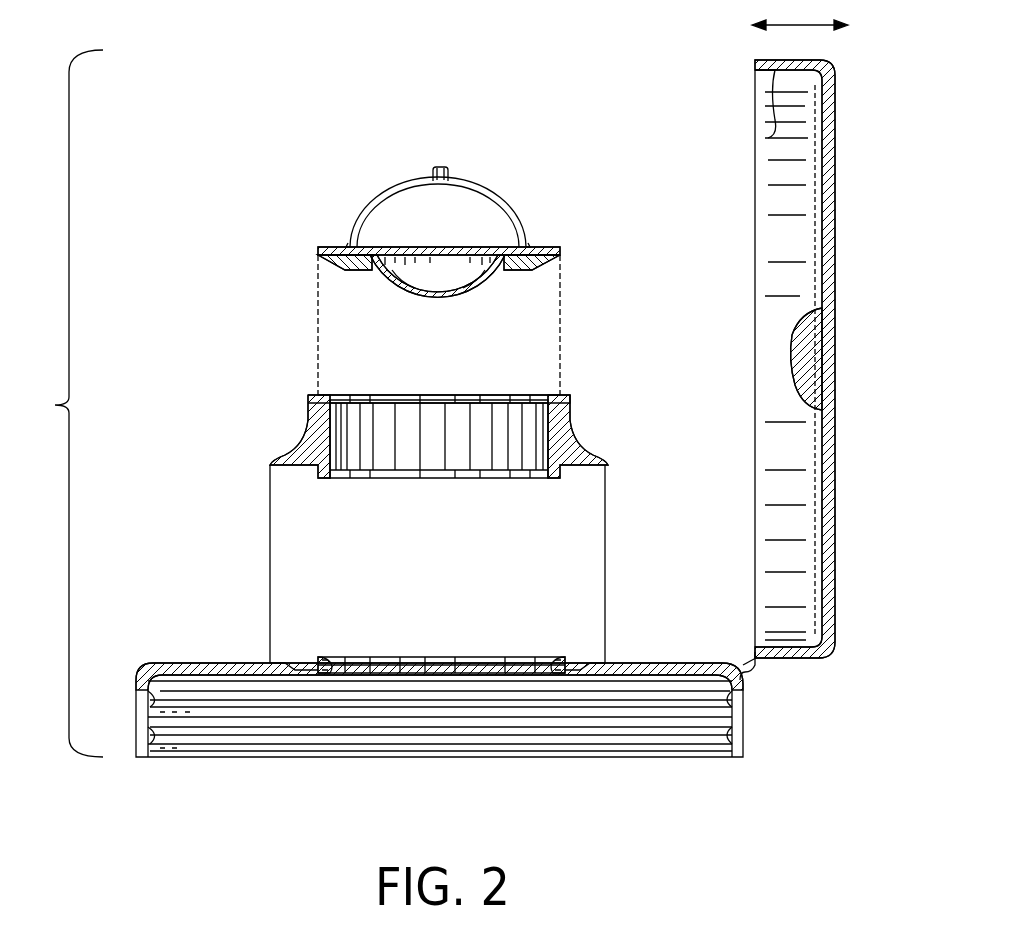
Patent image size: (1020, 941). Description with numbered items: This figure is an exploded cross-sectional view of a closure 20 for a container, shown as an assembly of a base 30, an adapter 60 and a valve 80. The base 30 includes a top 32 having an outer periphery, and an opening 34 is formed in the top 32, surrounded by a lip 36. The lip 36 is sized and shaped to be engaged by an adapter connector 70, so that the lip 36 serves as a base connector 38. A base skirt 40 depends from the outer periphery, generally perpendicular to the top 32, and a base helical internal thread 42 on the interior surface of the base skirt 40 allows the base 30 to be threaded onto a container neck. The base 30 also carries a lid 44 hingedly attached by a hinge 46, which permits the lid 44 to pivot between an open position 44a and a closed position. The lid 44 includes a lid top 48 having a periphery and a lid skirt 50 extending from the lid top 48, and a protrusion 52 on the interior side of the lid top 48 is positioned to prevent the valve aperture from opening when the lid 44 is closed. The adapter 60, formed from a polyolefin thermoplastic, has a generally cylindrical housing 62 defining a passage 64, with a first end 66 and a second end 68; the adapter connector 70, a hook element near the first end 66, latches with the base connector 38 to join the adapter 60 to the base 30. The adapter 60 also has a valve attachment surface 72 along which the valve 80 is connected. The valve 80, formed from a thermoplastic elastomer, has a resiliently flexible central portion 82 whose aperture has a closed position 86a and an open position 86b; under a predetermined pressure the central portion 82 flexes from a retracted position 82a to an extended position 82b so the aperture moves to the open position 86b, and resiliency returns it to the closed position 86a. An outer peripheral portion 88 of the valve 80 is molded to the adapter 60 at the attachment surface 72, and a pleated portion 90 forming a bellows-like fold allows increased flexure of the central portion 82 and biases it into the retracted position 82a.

The closure 20 is at (60, 403).
The base 30 is at (452, 701).
The top 32 is at (213, 663).
The opening 34 is at (457, 662).
The lip 36 is at (326, 660).
The base connector 38 is at (556, 660).
The base skirt 40 is at (744, 724).
The base helical internal thread 42 is at (222, 757).
The lid 44 is at (836, 186).
The open position 44a is at (860, 278).
The hinge 46 is at (757, 668).
The lid top 48 is at (836, 540).
The lid skirt 50 is at (772, 72).
The protrusion 52 is at (795, 385).
The adapter 60 is at (471, 451).
The housing 62 is at (600, 434).
The passage 64 is at (476, 456).
The first end 66 is at (322, 480).
The second end 68 is at (310, 396).
The adapter connector 70 is at (554, 480).
The valve attachment surface 72 is at (555, 395).
The valve 80 is at (462, 300).
The central portion 82 is at (450, 189).
The retracted position 82a is at (452, 298).
The extended position 82b is at (484, 184).
The closed position 86a is at (432, 298).
The open position 86b is at (440, 167).
The outer peripheral portion 88 is at (543, 247).
The pleated portion 90 is at (524, 268).